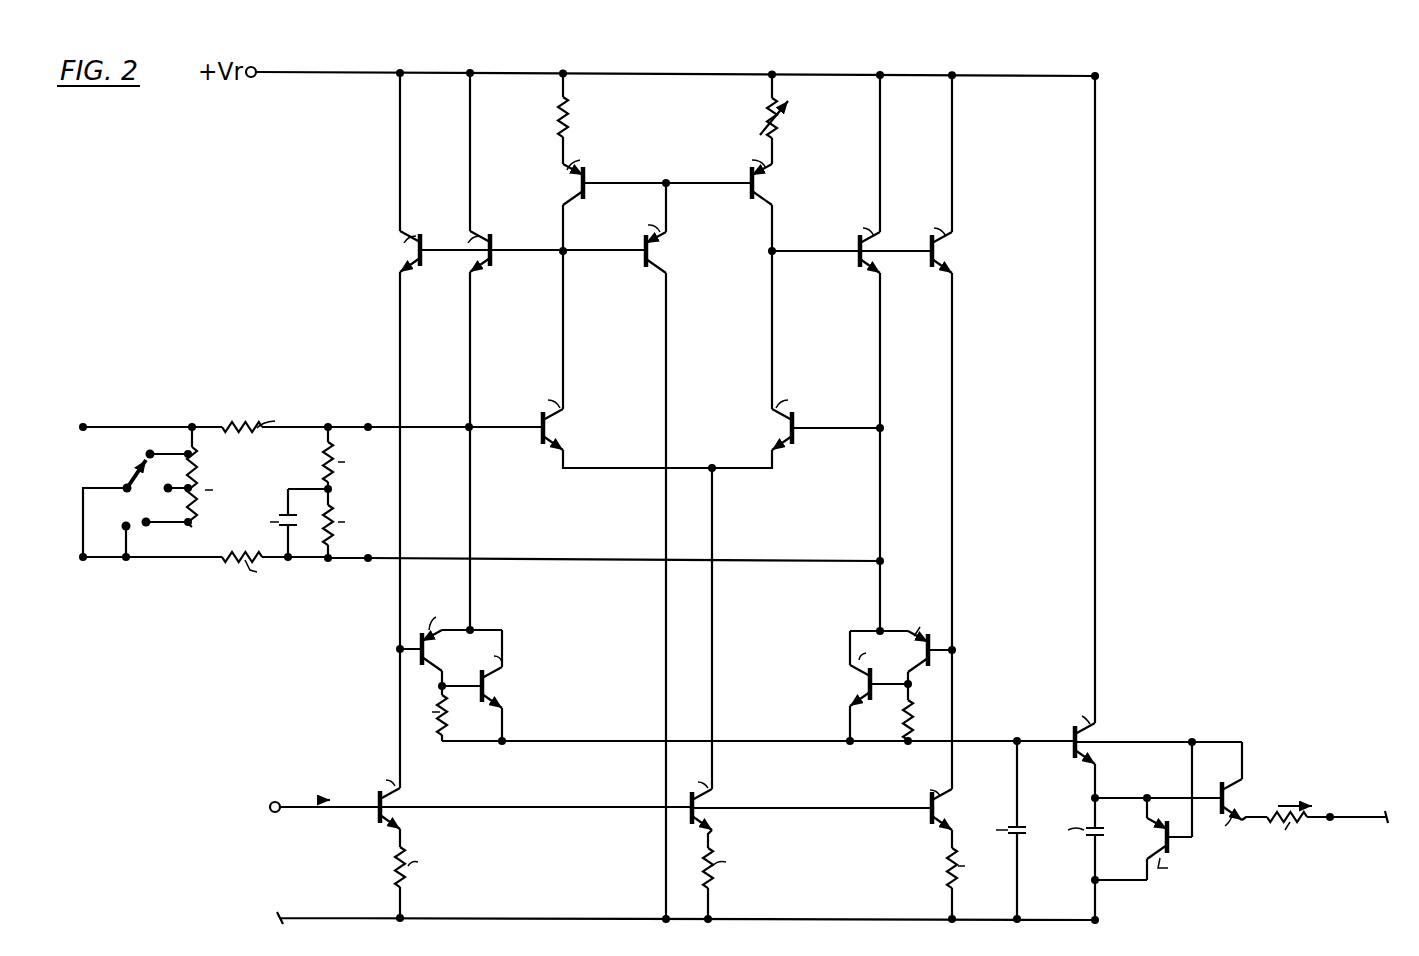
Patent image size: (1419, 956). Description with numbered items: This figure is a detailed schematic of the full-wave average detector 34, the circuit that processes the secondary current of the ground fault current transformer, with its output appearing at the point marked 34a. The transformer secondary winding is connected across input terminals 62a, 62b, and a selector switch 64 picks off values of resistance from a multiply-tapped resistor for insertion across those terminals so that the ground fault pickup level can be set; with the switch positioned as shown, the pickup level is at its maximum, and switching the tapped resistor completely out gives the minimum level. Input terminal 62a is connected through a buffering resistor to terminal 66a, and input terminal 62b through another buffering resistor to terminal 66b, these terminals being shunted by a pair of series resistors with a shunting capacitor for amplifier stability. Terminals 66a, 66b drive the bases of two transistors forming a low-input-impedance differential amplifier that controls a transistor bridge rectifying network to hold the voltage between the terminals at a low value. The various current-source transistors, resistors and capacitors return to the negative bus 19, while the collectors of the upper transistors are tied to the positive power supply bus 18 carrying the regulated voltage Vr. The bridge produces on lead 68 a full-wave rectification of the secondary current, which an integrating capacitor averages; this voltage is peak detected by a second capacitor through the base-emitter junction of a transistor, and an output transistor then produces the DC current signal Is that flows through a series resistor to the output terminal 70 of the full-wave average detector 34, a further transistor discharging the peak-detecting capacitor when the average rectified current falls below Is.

The positive power supply bus 18 is at (665, 73).
The negative bus 19 is at (575, 921).
The full-wave average detector 34 is at (268, 243).
The output terminal of current source circuit 34a is at (1362, 814).
The input terminal 62a is at (92, 409).
The input terminal 62b is at (82, 561).
The selector switch 64 is at (138, 468).
The terminal 66a is at (368, 423).
The input terminal 66b is at (368, 562).
The lead 68 is at (977, 741).
The output terminal 70 is at (1329, 822).